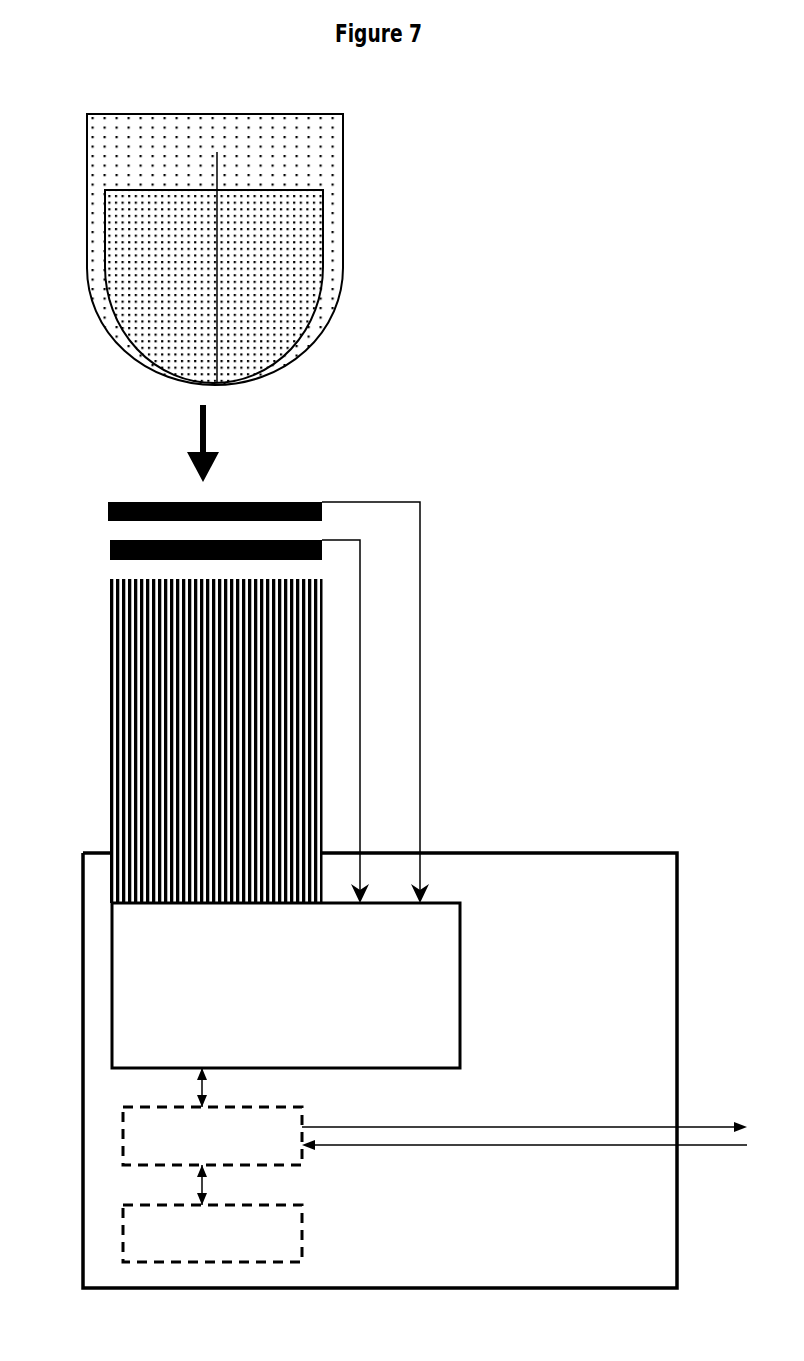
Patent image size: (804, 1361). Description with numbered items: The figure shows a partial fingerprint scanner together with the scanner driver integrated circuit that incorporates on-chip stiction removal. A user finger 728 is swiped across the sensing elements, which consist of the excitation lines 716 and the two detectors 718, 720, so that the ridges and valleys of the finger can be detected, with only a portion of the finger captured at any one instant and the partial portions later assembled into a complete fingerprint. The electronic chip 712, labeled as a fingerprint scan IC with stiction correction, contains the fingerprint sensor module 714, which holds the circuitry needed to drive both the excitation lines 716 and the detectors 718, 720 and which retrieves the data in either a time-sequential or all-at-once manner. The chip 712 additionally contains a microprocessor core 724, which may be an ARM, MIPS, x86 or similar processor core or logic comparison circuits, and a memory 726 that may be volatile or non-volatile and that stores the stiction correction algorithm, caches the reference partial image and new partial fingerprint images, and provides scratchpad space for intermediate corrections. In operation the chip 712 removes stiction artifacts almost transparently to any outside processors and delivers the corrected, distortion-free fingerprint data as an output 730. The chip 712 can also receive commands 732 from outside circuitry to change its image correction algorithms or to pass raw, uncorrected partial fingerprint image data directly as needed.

The electronic chip 712 is at (380, 1070).
The fingerprint sensor module 714 is at (286, 985).
The excitation lines 716 is at (190, 741).
The detector 718 is at (370, 578).
The detector 720 is at (431, 575).
The microprocessor core 724 is at (212, 1136).
The memory 726 is at (212, 1233).
The user finger 728 is at (372, 270).
The output 730 is at (711, 1115).
The commands 732 is at (710, 1165).